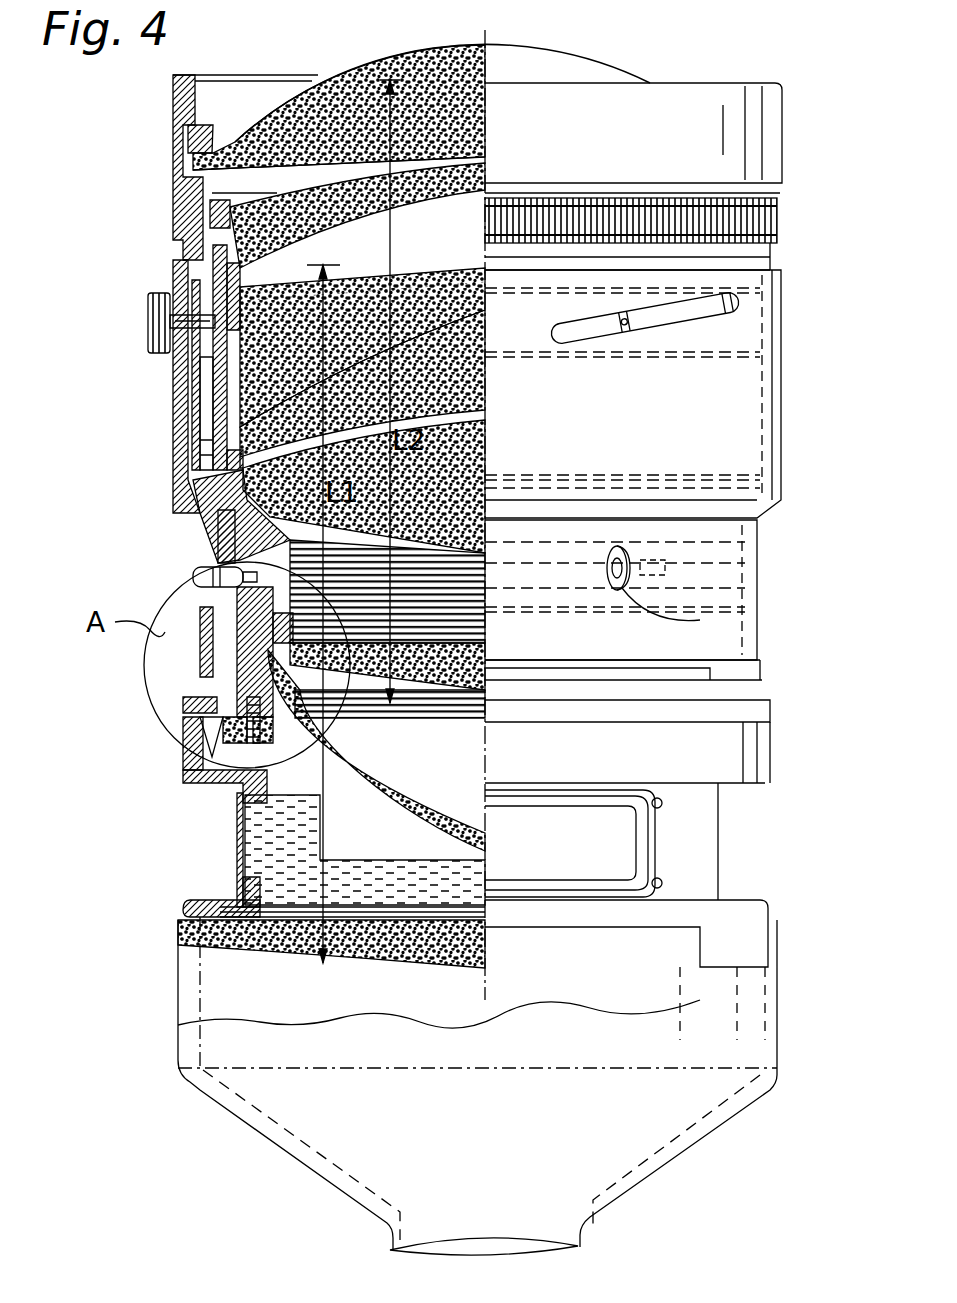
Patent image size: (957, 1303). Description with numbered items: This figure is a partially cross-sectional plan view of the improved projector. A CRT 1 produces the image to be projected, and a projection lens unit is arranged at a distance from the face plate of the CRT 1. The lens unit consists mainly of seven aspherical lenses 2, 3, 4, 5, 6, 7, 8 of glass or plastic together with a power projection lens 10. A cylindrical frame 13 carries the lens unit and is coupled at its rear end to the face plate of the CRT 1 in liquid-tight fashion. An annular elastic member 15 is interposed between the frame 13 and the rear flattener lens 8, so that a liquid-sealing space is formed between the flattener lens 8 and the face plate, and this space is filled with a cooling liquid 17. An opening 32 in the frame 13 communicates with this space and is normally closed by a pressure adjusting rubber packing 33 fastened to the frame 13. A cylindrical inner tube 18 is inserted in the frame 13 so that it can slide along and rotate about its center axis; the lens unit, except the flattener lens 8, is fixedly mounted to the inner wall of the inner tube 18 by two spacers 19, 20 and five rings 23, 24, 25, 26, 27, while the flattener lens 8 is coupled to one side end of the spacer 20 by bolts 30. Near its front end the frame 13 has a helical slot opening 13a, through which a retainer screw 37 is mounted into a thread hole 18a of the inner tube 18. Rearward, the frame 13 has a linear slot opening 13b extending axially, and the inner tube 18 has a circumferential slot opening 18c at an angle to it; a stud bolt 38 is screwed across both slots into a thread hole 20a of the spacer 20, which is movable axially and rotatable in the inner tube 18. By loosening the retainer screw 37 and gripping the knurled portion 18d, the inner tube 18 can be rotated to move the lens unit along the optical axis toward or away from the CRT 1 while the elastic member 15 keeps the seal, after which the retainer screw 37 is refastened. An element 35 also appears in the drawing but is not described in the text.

The CRT 1 is at (750, 1050).
The aspherical lens 2 is at (598, 75).
The aspherical lens 3 is at (488, 162).
The aspherical lens 4 is at (430, 285).
The aspherical lens 5 is at (355, 300).
The aspherical lens 6 is at (478, 385).
The aspherical lens 7 is at (445, 690).
The flattener lens 8 is at (400, 820).
The power projection lens 10 is at (478, 430).
The cylindrical frame 13 is at (180, 408).
The helical slot opening 13a is at (160, 322).
The linear slot opening 13b is at (215, 520).
The annular elastic member 15 is at (248, 735).
The cooling liquid 17 is at (235, 815).
The inner tube 18 is at (200, 212).
The thread hole 18a is at (735, 318).
The slot opening 18c is at (215, 580).
The knurled portion 18d is at (770, 215).
The spacer 19 is at (185, 365).
The spacer 20 is at (255, 660).
The thread hole 20a is at (735, 570).
The ring 23 is at (180, 135).
The ring 24 is at (200, 172).
The ring 25 is at (215, 270).
The ring 26 is at (190, 450).
The ring 27 is at (265, 625).
The bolts 30 is at (230, 775).
The opening 32 is at (250, 865).
The pressure adjusting rubber packing 33 is at (240, 830).
The flange 35 is at (200, 700).
The retainer screw 37 is at (160, 295).
The stud bolt 38 is at (205, 570).